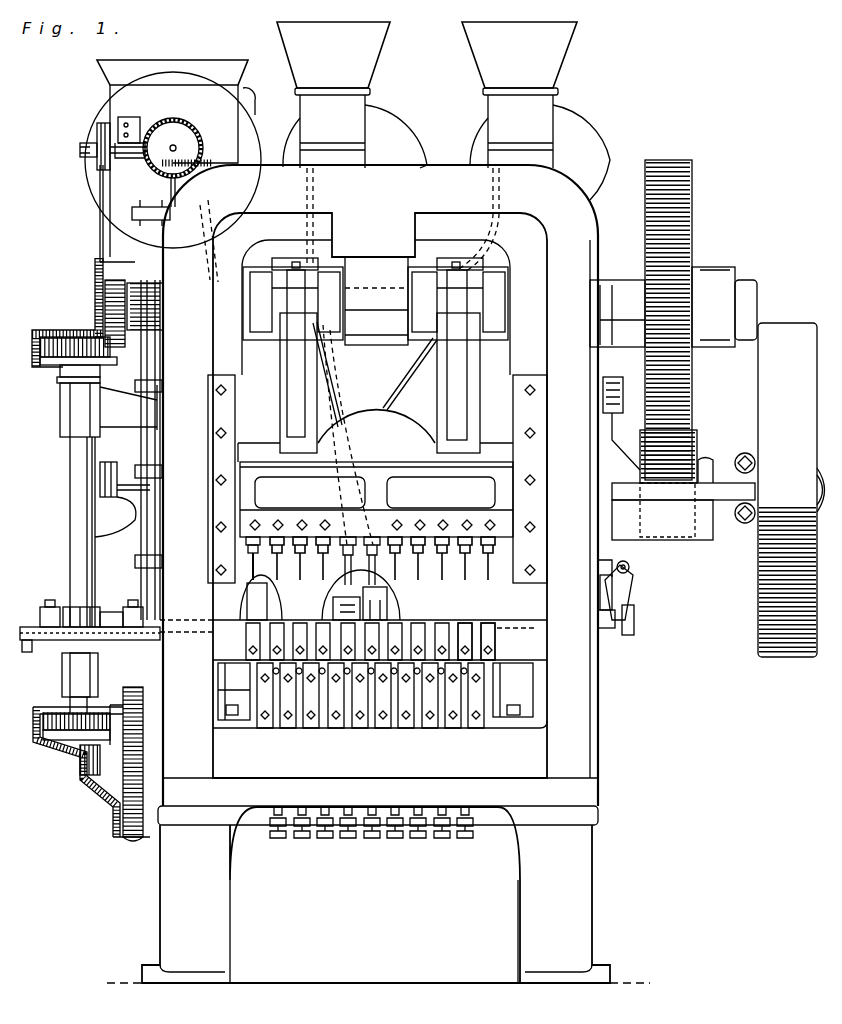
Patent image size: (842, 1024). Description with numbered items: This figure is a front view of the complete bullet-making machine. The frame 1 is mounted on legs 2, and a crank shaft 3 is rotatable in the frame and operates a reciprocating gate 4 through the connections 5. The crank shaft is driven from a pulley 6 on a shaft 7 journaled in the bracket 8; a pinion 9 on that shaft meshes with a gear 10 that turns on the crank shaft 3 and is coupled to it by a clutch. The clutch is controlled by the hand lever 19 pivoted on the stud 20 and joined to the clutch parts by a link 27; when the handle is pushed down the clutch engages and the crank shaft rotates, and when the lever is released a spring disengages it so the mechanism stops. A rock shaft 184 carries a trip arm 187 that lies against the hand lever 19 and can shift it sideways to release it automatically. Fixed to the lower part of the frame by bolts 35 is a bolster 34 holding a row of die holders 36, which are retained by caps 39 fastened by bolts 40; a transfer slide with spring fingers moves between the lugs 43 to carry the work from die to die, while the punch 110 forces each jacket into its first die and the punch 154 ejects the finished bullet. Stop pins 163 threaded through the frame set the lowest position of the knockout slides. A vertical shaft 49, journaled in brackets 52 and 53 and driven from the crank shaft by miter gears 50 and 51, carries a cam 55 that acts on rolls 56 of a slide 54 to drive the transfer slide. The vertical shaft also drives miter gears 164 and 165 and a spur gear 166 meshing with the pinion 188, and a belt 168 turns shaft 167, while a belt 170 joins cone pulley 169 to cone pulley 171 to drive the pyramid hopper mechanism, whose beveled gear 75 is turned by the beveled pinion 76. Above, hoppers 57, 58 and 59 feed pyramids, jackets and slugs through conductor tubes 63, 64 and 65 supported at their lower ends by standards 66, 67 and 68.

The frame 1 is at (596, 722).
The legs 2 is at (228, 908).
The crank shaft 3 is at (150, 310).
The reciprocating gate 4 is at (505, 497).
The connections 5 is at (300, 365).
The pulley 6 is at (760, 572).
The shaft 7 is at (815, 480).
The bracket 8 is at (712, 462).
The pinion 9 is at (695, 440).
The gear 10 is at (685, 395).
The hand lever 19 is at (634, 633).
The stud 20 is at (608, 628).
The link 27 is at (630, 567).
The bolster 34 is at (533, 693).
The bolts 35 is at (232, 715).
The die holders 36 is at (470, 628).
The caps 39 is at (285, 652).
The bolts 40 is at (285, 640).
The lugs 43 is at (450, 630).
The vertical shaft 49 is at (70, 462).
The miter gear 50 is at (95, 305).
The miter gear 51 is at (90, 335).
The bracket 52 is at (60, 413).
The bracket 53 is at (62, 678).
The slide 54 is at (40, 630).
The cam 55 is at (100, 600).
The rolls 56 is at (50, 600).
The hopper 57 is at (362, 95).
The hopper 58 is at (112, 104).
The hopper 59 is at (550, 95).
The conductor tube 63 is at (212, 208).
The conductor tube 64 is at (335, 395).
The conductor tube 65 is at (420, 378).
The standard 66 is at (255, 600).
The standard 67 is at (333, 603).
The standard 68 is at (392, 600).
The beveled gear 75 is at (192, 122).
The beveled pinion 76 is at (147, 148).
The punch 110 is at (248, 563).
The punch 154 is at (488, 580).
The stop pins 163 is at (312, 833).
The miter gear 164 is at (40, 730).
The miter gear 165 is at (110, 790).
The spur gear 166 is at (128, 840).
The shaft 167 is at (95, 535).
The belt 168 is at (160, 580).
The cone pulley 169 is at (100, 485).
The belt 170 is at (100, 232).
The cone pulley 171 is at (97, 160).
The rock shaft 184 is at (630, 578).
The trip arm 187 is at (635, 598).
The pinion 188 is at (145, 688).